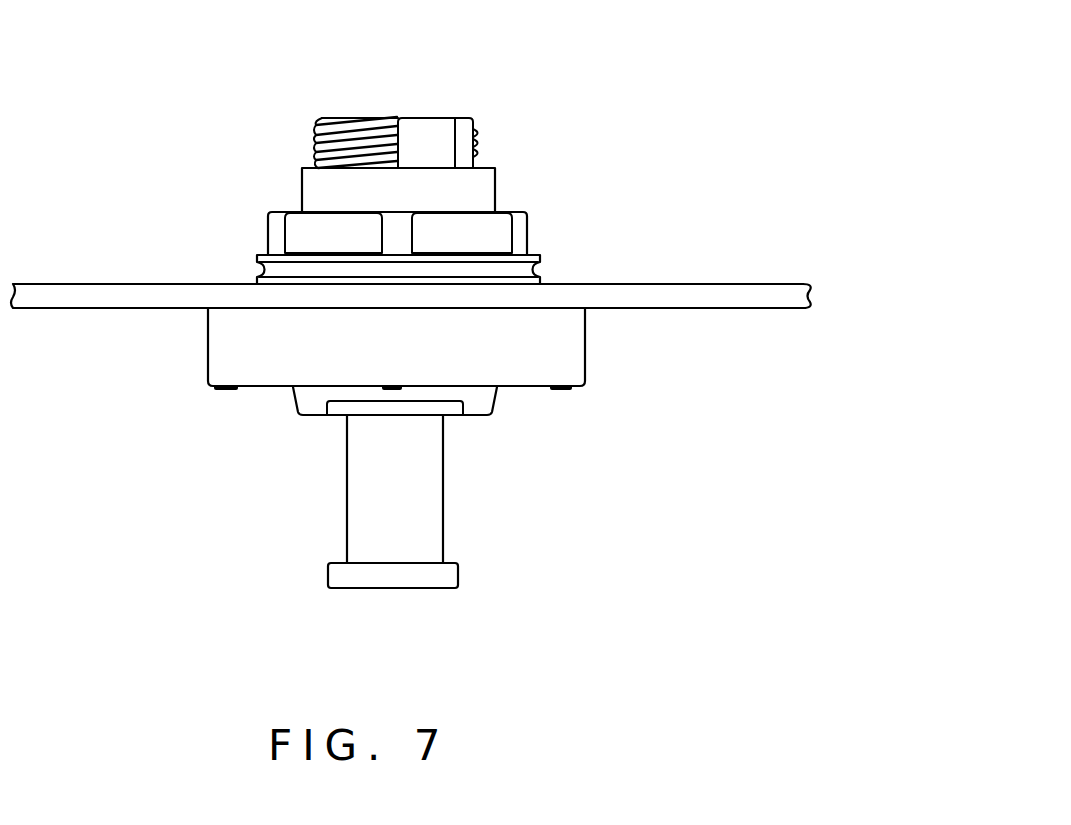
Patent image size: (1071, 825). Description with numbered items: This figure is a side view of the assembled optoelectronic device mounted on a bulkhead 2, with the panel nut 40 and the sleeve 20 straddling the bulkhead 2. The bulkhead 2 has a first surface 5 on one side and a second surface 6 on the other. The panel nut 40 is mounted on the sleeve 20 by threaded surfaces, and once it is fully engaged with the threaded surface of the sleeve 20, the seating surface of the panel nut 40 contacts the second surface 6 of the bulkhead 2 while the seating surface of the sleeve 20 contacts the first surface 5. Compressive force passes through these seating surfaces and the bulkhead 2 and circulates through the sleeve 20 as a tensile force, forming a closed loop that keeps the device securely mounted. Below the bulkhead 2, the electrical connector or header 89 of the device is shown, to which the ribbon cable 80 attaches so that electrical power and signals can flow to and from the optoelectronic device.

The bulkhead 2 is at (713, 284).
The second surface 6 is at (785, 284).
The first surface 5 is at (732, 309).
The panel nut 40 is at (528, 230).
The sleeve 20 is at (585, 359).
The header 89 is at (497, 403).
The ribbon cable 80 is at (443, 518).